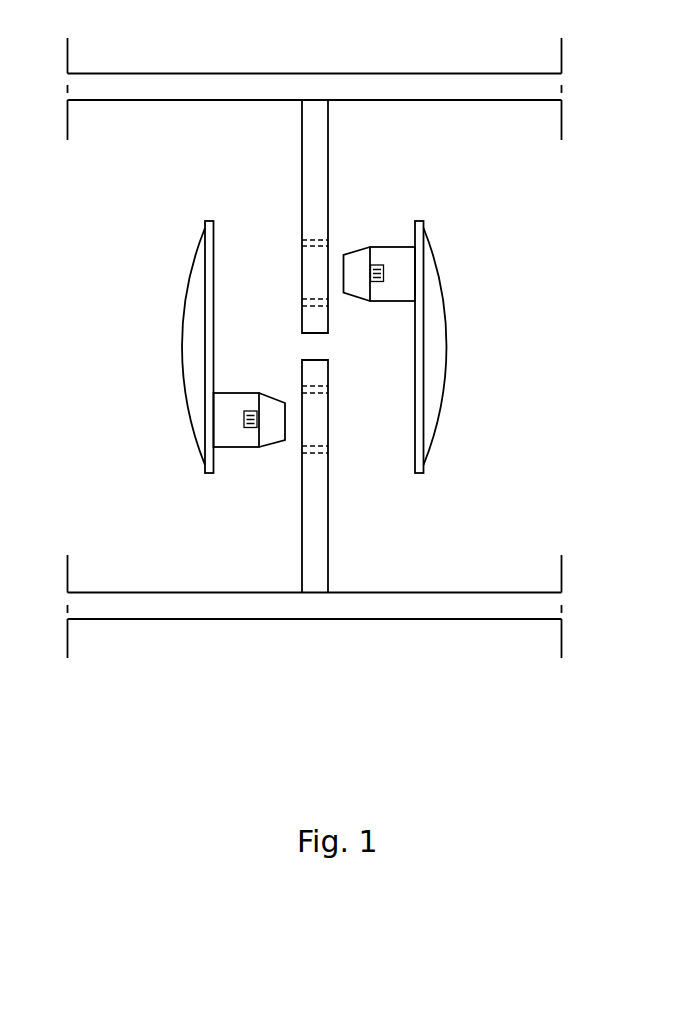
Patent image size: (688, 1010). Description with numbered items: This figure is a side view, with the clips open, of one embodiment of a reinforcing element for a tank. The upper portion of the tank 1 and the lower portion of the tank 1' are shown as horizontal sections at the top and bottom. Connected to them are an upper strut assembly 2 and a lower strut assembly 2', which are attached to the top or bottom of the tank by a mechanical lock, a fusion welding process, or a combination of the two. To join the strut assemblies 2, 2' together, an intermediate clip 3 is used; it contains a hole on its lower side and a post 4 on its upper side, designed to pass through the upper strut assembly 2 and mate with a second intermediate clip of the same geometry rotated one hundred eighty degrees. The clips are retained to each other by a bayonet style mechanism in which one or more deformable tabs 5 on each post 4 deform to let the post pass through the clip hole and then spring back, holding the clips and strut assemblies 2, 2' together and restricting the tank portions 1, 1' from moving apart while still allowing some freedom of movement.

The upper portion of the tank 1 is at (315, 76).
The lower portion of the tank 1' is at (315, 616).
The upper strut assembly 2 is at (277, 216).
The lower strut assembly 2' is at (276, 476).
The intermediate clip 3 is at (448, 298).
The post 4 is at (373, 243).
The deformable tab 5 is at (250, 429).